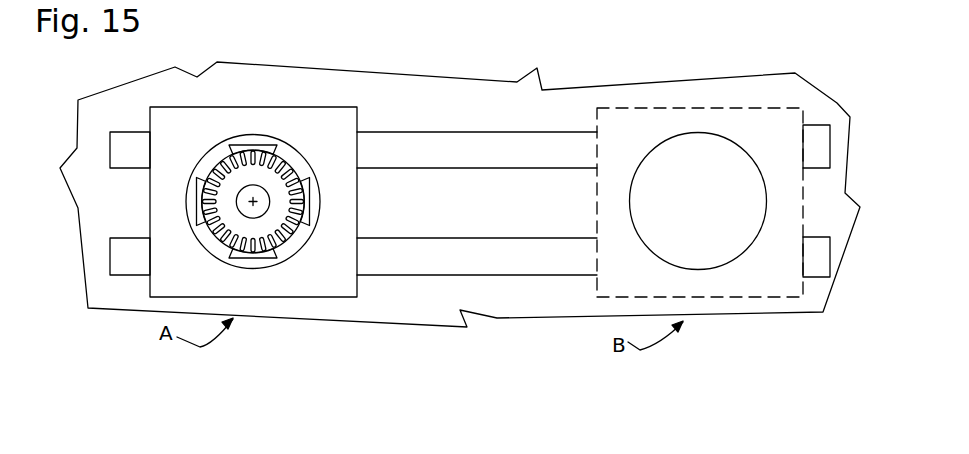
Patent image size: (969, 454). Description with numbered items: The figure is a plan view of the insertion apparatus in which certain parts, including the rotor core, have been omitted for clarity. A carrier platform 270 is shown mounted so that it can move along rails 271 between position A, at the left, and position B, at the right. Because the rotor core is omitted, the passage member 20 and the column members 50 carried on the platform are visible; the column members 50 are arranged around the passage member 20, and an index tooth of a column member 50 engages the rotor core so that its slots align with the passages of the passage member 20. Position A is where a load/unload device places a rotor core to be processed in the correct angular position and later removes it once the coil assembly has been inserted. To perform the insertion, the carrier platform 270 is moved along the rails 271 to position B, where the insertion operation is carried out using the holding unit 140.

The passage member 20 is at (228, 208).
The column members 50 is at (258, 148).
The holding unit 140 is at (685, 167).
The carrier platform 270 is at (312, 132).
The rails 271 is at (455, 153).